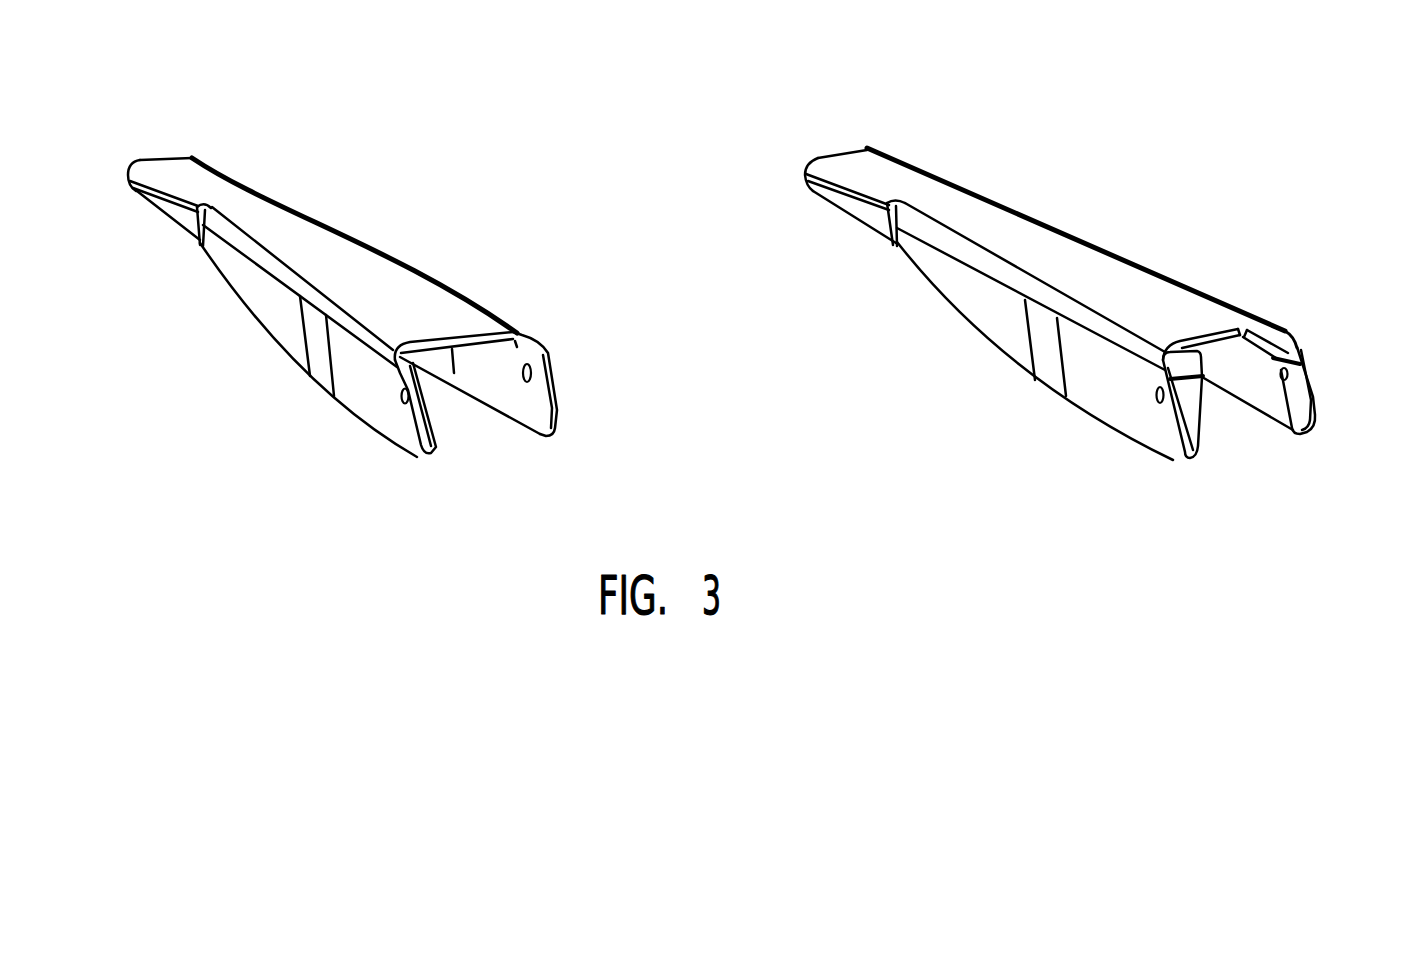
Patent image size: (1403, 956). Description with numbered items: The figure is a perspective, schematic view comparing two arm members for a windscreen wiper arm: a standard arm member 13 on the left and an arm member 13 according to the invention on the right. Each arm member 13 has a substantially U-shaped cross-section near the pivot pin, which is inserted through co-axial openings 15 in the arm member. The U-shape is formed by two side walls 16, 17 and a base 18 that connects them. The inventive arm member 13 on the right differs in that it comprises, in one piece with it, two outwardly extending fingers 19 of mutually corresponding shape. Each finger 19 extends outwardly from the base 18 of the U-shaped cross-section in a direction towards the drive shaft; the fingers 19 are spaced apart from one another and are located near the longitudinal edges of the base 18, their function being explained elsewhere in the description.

The arm member 13 is at (738, 168).
The co-axial openings 15 is at (406, 405).
The side wall 16 is at (287, 340).
The side wall 17 is at (528, 417).
The base 18 is at (406, 287).
The fingers 19 is at (1288, 377).